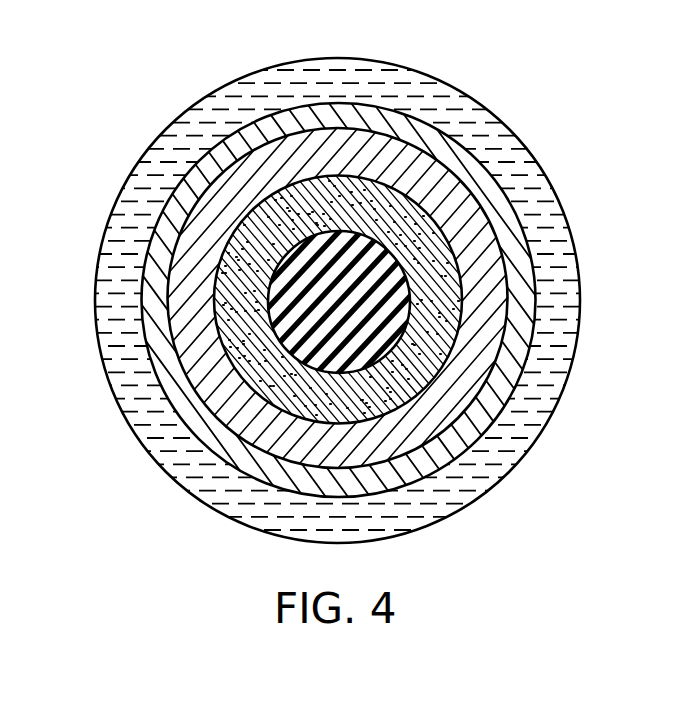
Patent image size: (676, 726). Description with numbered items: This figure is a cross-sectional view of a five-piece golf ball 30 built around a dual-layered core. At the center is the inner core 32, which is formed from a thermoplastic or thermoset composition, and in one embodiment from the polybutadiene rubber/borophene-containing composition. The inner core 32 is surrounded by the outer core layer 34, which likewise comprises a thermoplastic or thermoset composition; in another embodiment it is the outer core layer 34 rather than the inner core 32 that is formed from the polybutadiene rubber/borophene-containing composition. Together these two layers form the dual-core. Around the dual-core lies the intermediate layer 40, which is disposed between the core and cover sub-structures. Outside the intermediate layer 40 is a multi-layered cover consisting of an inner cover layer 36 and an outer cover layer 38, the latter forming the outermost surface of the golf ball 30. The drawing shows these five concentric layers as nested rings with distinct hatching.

The five-piece golf ball 30 is at (490, 58).
The inner core 32 is at (382, 268).
The outer core layer 34 is at (443, 287).
The inner cover layer 36 is at (505, 387).
The outer cover layer 38 is at (528, 428).
The intermediate layer 40 is at (487, 322).